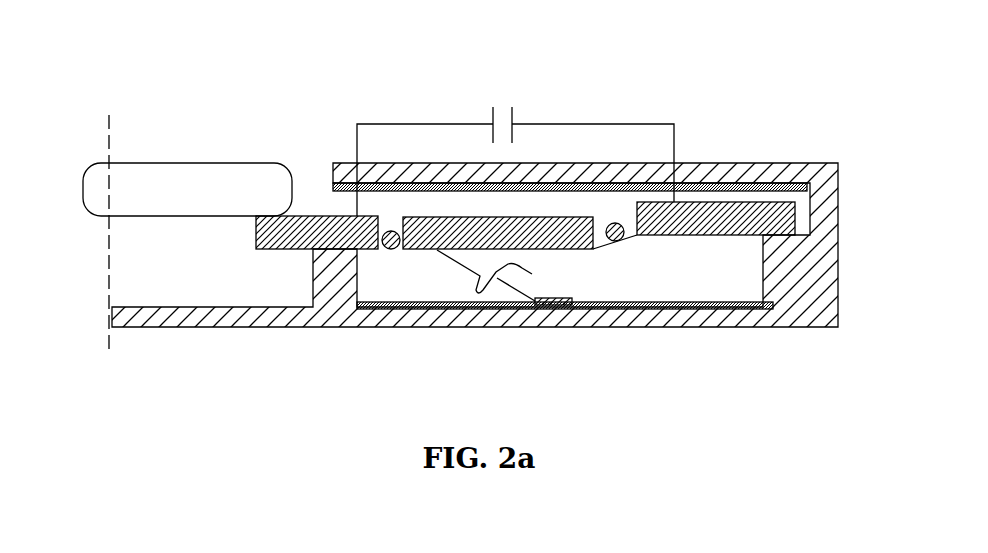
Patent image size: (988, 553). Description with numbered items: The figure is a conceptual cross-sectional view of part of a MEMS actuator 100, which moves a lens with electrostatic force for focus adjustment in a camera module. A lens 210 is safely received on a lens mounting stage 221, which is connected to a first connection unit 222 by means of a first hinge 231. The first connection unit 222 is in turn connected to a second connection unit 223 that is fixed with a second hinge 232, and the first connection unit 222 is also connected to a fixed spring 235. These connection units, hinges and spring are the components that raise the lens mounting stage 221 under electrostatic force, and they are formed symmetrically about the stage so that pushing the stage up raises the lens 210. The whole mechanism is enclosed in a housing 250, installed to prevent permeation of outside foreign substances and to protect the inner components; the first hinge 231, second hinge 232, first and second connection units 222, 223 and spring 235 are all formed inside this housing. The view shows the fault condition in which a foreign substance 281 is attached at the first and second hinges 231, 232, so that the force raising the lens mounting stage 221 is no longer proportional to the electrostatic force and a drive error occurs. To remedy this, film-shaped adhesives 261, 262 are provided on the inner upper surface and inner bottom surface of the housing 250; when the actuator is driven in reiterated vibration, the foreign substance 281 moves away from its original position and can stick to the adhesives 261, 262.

The MEMS actuator 100 is at (142, 43).
The lens 210 is at (232, 175).
The lens mounting stage 221 is at (305, 230).
The first connection unit 222 is at (487, 222).
The second connection unit 223 is at (730, 207).
The first hinge 231 is at (397, 249).
The second hinge 232 is at (613, 243).
The spring 235 is at (525, 270).
The housing 250 is at (817, 167).
The adhesive 261 is at (770, 187).
The adhesive 262 is at (723, 312).
The foreign substance 281 is at (391, 229).